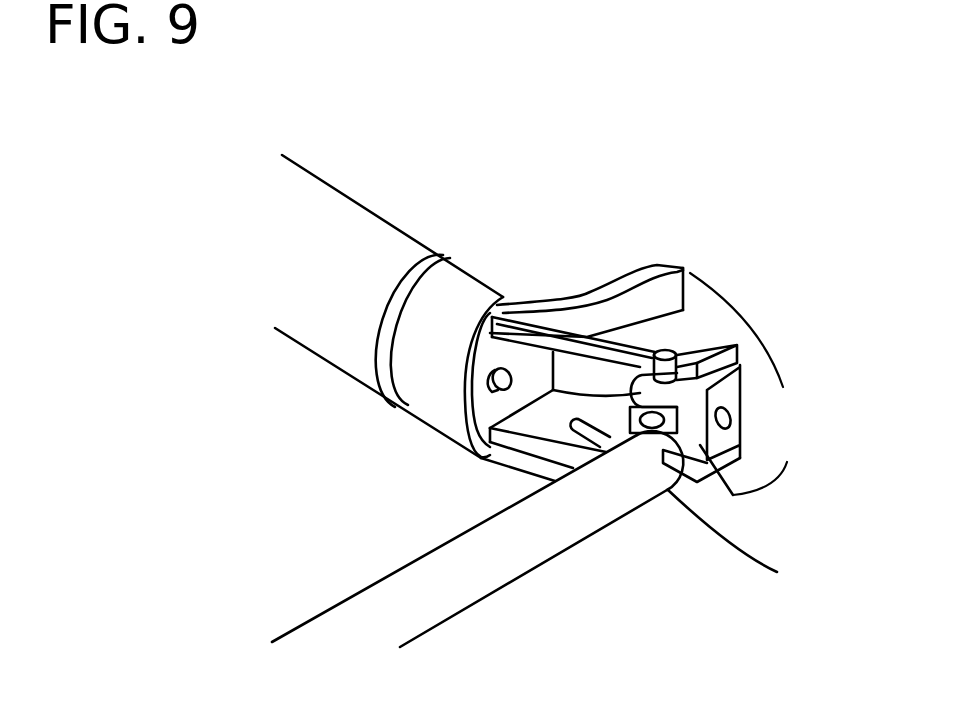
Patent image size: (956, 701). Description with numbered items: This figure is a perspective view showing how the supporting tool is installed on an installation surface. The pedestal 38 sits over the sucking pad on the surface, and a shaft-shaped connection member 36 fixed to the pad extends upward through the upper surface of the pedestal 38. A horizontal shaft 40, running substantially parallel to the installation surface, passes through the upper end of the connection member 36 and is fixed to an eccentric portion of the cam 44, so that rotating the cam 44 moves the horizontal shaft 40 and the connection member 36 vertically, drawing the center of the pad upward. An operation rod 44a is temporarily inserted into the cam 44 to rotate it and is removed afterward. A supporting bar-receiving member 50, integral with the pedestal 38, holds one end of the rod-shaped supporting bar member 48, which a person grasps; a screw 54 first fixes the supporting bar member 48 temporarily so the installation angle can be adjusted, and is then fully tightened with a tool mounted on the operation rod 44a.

The connection member 36 is at (700, 483).
The pedestal 38 is at (577, 297).
The horizontal shaft 40 is at (667, 352).
The cam 44 is at (730, 390).
The operation rod 44a is at (552, 533).
The supporting bar member 48 is at (323, 340).
The supporting bar-receiving member 50 is at (423, 405).
The screw 54 is at (488, 388).